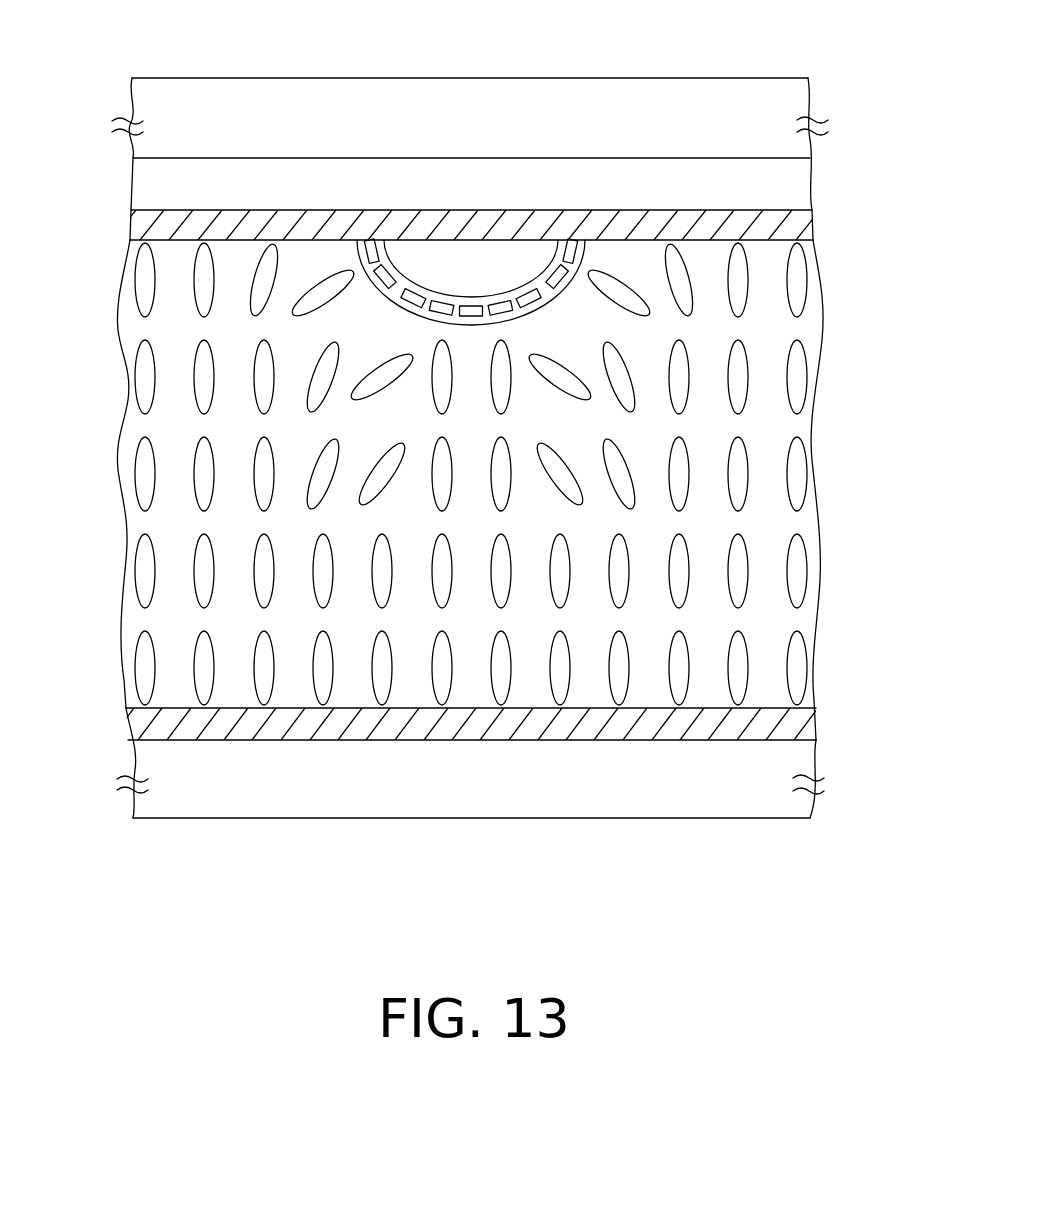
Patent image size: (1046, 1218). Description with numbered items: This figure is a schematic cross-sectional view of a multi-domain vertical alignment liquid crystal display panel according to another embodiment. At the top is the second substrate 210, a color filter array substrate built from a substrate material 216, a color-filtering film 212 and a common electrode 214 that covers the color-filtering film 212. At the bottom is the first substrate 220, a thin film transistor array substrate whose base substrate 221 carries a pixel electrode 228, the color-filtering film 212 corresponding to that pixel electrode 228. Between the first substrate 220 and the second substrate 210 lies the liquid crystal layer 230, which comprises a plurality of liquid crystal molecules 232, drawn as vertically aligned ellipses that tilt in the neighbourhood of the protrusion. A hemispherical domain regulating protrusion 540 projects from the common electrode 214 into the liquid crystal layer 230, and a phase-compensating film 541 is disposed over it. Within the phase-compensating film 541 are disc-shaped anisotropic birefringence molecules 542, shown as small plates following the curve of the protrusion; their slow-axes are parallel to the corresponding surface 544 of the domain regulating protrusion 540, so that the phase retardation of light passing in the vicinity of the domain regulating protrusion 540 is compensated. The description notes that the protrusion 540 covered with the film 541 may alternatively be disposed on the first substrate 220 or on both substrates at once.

The second substrate 210 is at (103, 80).
The substrate material 216 is at (790, 100).
The color-filtering film 212 is at (790, 182).
The common electrode 214 is at (790, 227).
The liquid crystal layer 230 is at (128, 430).
The liquid crystal molecules 232 is at (785, 378).
The first substrate 220 is at (103, 708).
The pixel electrode 228 is at (780, 729).
The substrate 221 is at (785, 806).
The domain regulating protrusion 540 is at (493, 265).
The phase-compensating film 541 is at (393, 302).
The anisotropic birefringence molecules 542 is at (362, 252).
The surface 544 is at (410, 270).